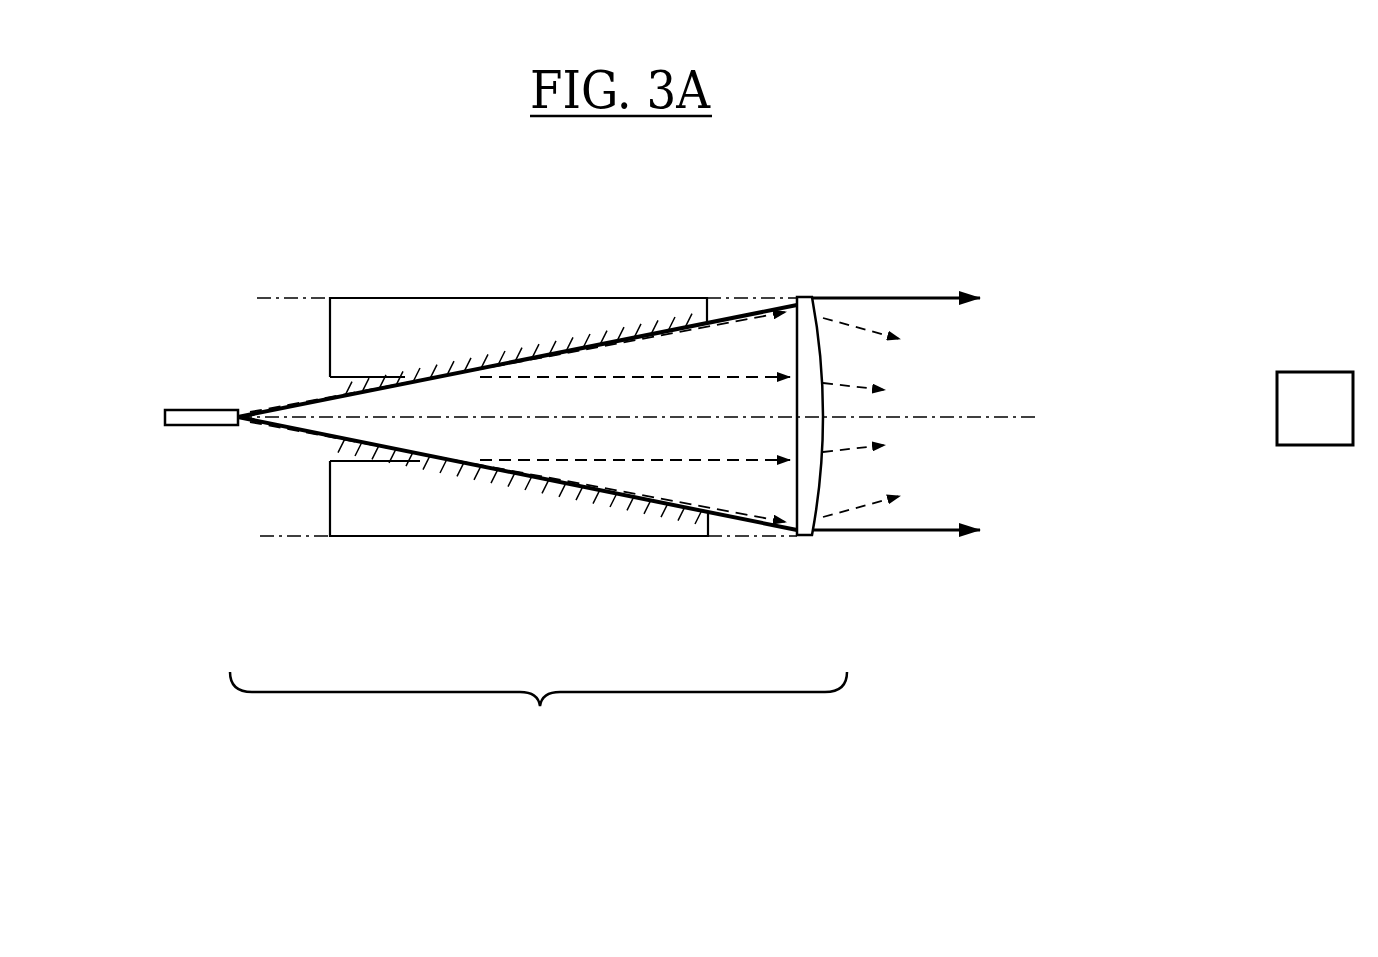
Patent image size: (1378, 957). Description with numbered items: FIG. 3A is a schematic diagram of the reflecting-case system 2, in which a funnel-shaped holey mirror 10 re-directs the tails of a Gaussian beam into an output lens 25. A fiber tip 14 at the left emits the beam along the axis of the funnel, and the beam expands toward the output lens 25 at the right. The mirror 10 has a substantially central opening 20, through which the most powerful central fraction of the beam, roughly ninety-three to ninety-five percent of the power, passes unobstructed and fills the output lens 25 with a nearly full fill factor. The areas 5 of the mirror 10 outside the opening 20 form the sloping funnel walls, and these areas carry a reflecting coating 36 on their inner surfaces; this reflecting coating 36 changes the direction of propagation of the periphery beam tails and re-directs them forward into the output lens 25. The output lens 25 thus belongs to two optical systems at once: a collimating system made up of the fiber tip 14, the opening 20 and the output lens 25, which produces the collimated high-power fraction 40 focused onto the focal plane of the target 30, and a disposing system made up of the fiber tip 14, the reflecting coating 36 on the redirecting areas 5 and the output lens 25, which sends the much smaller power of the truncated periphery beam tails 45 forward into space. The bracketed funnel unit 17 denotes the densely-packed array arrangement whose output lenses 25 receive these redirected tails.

The system 2 is at (216, 236).
The redirecting area 5 is at (503, 317).
The holey mirror 10 is at (400, 290).
The fiber tip 14 is at (240, 430).
The densely-packed array 17 is at (538, 715).
The opening 20 is at (498, 412).
The output lens 25 is at (800, 297).
The target 30 is at (1335, 428).
The reflecting coating 36 is at (427, 462).
The high-power fraction 40 is at (1062, 553).
The periphery beam tails 45 is at (1186, 416).